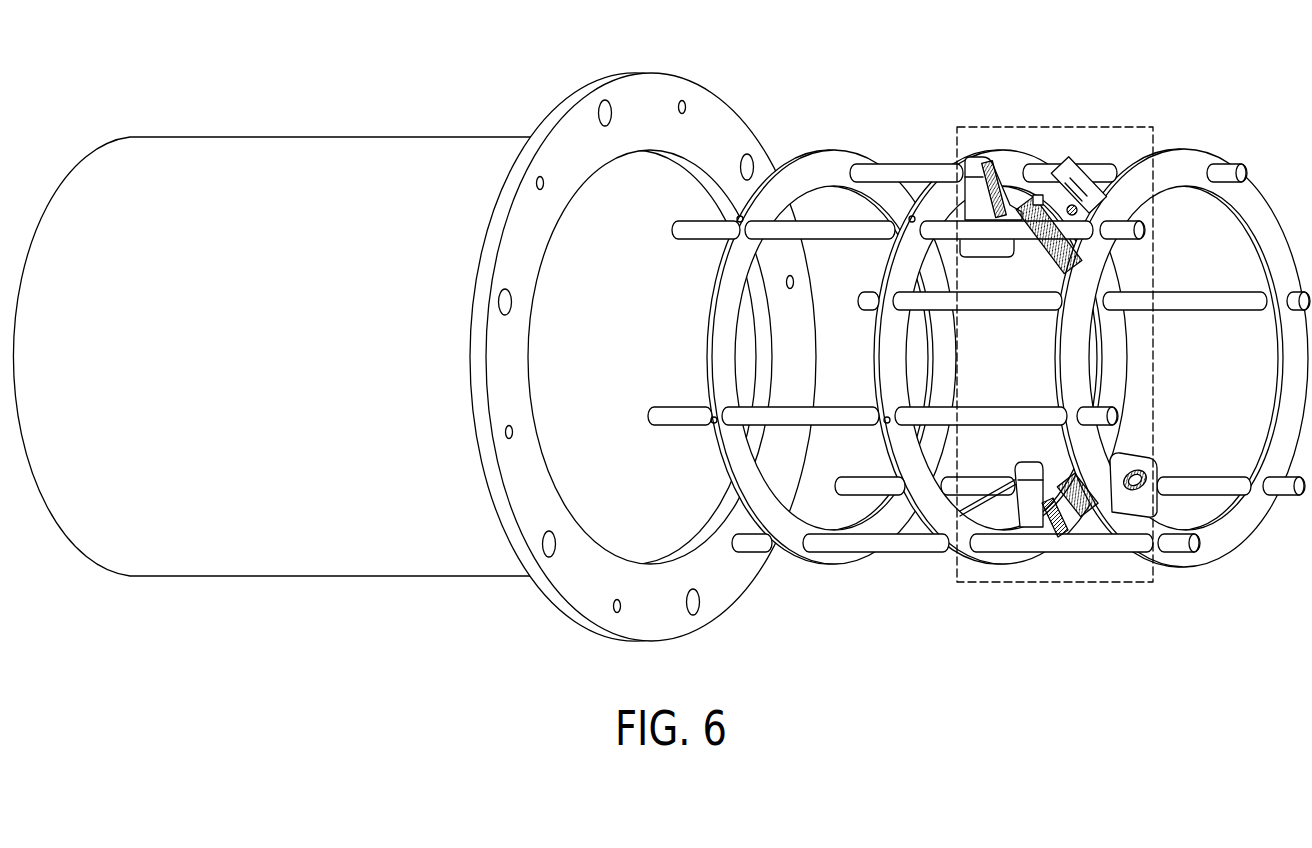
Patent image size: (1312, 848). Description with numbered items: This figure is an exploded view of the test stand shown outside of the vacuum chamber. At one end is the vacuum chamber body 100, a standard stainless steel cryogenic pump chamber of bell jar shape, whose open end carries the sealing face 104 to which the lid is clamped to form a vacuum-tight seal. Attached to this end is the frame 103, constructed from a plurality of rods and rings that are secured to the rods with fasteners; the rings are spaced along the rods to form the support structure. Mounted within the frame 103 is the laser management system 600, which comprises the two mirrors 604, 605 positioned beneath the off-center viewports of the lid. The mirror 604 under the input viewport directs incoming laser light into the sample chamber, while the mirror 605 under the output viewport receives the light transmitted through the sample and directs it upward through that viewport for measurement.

The vacuum chamber body 100 is at (405, 170).
The sealing face 104 is at (718, 133).
The frame 103 is at (965, 543).
The laser management system 600 is at (993, 127).
The mirror 604 is at (1073, 163).
The mirror 605 is at (1158, 518).